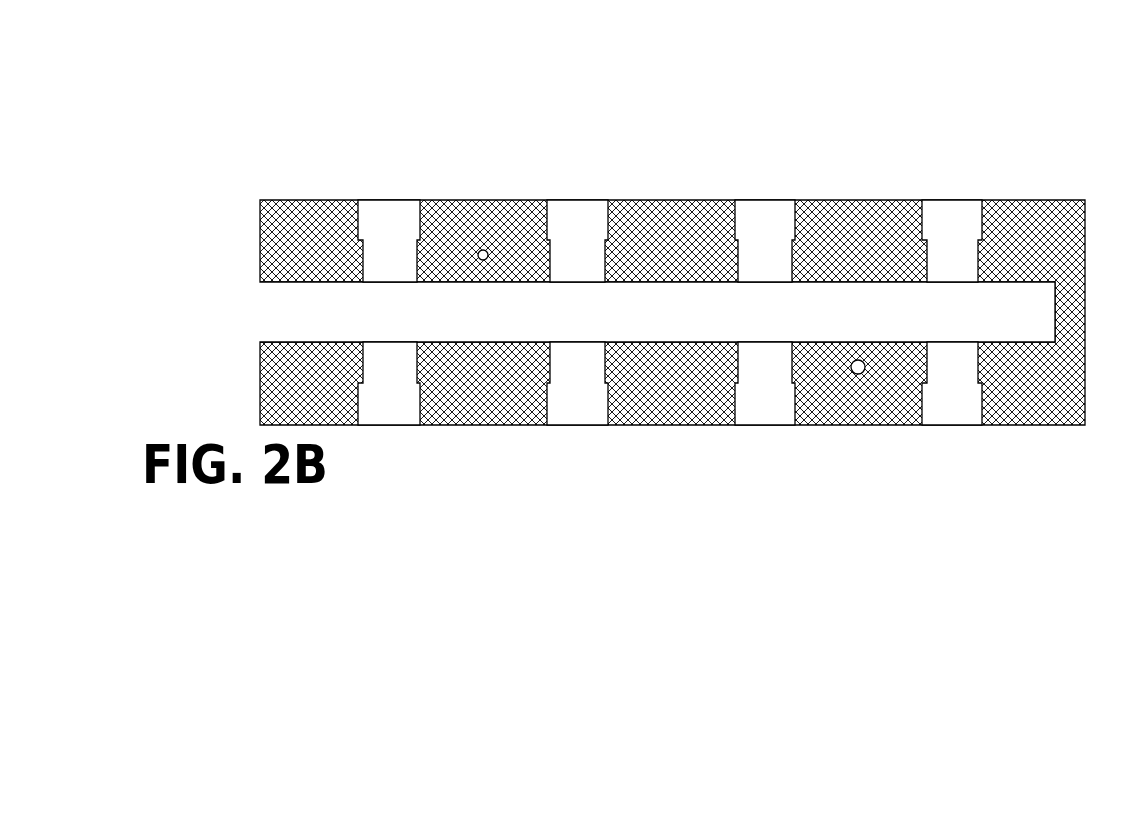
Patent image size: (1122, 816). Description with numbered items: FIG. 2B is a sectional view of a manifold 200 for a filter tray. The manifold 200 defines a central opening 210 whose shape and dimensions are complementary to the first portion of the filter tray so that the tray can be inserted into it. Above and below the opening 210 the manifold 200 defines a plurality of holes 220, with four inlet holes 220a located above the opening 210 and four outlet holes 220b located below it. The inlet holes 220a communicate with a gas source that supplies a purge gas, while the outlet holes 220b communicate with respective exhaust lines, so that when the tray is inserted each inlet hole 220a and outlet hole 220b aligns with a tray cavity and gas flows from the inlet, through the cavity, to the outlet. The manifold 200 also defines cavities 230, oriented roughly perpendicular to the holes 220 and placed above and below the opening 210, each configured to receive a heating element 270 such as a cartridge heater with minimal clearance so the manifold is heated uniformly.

The manifold 200 is at (981, 136).
The opening 210 is at (259, 305).
The holes 220 is at (943, 196).
The inlet holes 220a is at (590, 200).
The outlet holes 220b is at (396, 412).
The cavities 230 is at (489, 247).
The heating element 270 is at (476, 258).